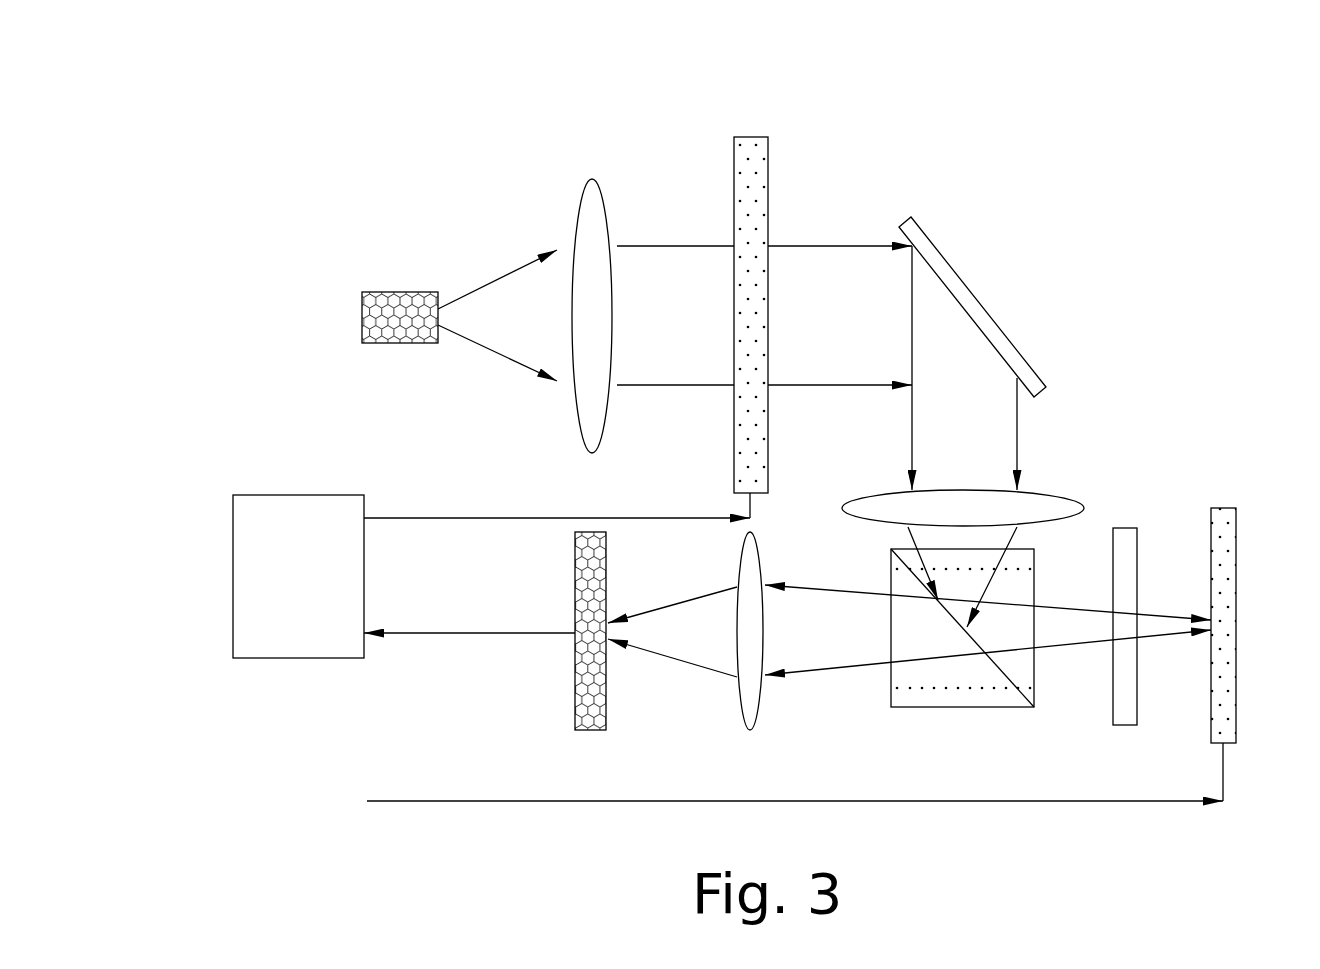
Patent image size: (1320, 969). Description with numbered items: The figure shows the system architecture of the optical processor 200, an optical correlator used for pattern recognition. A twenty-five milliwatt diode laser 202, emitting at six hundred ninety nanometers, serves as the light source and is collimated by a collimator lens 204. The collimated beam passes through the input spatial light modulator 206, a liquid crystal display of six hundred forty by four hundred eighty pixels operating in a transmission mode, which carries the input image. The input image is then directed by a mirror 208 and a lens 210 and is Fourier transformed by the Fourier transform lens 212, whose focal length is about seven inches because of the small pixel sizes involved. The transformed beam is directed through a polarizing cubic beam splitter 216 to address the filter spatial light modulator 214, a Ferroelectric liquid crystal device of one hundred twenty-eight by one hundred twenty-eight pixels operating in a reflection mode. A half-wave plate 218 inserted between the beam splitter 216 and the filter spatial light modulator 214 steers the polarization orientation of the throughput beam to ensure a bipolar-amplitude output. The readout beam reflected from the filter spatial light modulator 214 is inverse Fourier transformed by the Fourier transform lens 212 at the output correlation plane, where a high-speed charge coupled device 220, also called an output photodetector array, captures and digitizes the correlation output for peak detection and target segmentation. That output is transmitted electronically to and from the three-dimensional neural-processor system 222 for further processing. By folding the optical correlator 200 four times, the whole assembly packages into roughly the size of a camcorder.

The optical processor 200 is at (962, 832).
The diode laser 202 is at (400, 292).
The collimator lens 204 is at (592, 178).
The input spatial light modulator 206 is at (757, 137).
The mirror 208 is at (912, 217).
The lens 210 is at (1057, 492).
The Fourier transform lens 212 is at (750, 730).
The filter spatial light modulator 214 is at (1227, 508).
The polarizing cubic beam splitter 216 is at (1127, 528).
The half-wave plate 218 is at (952, 708).
The charge coupled device 220 is at (590, 730).
The three-dimensional neural-processor system 222 is at (300, 495).